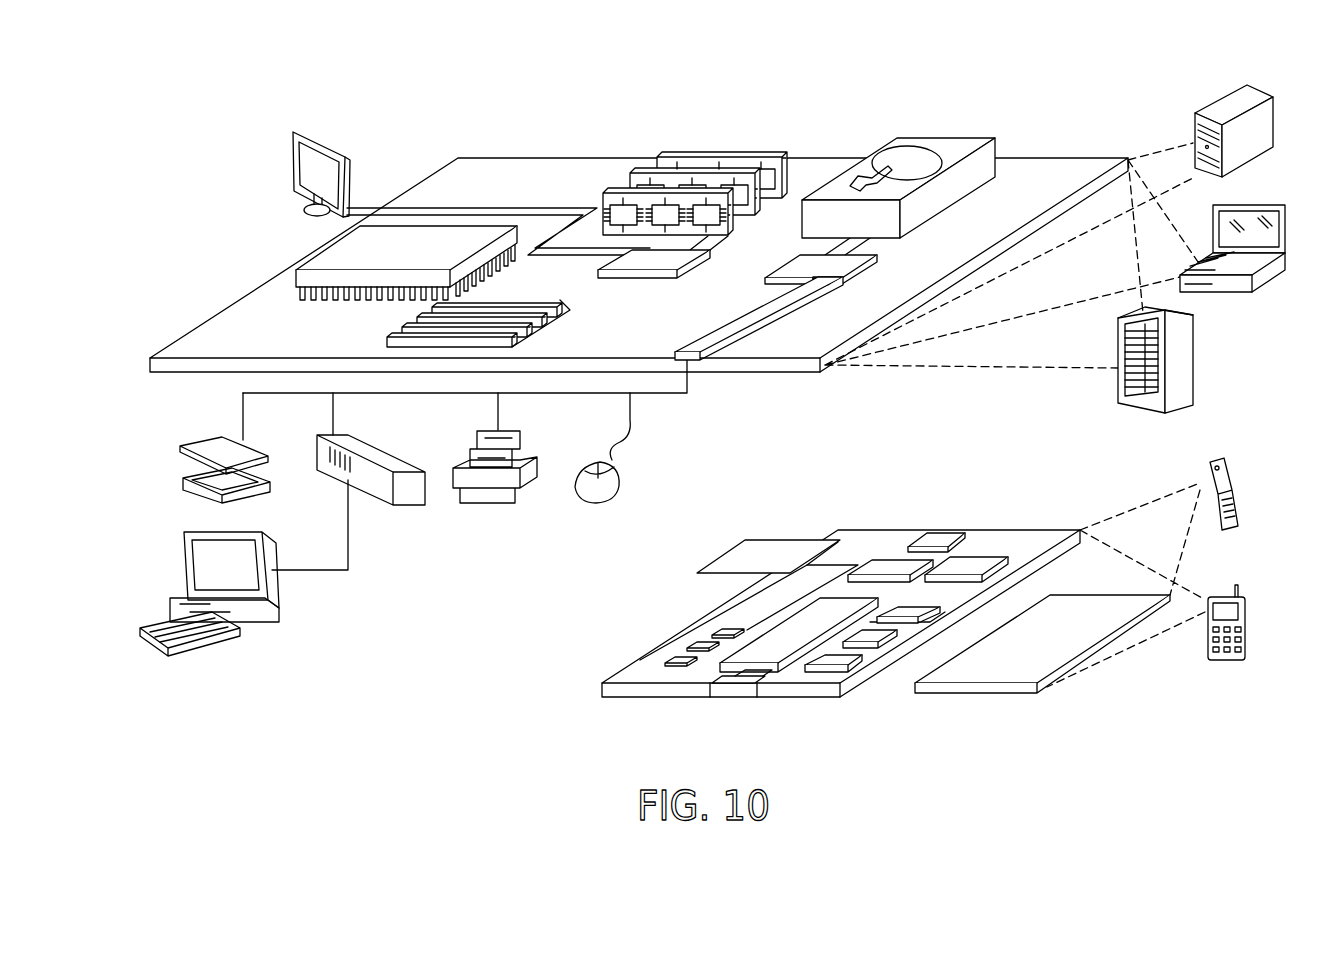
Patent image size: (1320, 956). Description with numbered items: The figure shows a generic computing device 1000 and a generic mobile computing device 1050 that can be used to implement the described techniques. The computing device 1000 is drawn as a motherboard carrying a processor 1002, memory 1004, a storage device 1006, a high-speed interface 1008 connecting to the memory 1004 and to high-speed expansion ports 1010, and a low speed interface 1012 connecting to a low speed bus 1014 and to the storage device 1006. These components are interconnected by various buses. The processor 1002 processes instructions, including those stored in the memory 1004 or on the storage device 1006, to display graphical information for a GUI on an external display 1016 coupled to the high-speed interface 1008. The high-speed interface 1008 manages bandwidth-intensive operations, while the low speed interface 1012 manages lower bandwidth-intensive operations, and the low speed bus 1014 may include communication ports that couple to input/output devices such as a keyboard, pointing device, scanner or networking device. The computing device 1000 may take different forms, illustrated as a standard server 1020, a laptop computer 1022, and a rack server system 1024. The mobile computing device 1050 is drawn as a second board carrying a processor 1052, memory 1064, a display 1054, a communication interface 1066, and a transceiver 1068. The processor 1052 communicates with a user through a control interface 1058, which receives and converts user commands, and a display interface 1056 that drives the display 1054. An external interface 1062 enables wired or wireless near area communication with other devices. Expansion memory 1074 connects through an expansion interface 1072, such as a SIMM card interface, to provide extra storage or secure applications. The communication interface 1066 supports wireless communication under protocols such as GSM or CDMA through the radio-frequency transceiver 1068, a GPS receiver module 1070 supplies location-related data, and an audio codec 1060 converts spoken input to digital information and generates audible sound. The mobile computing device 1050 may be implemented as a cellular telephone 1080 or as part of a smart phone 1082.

The computing device 1000 is at (414, 110).
The processor 1002 is at (318, 252).
The memory 1004 is at (730, 153).
The storage device 1006 is at (937, 137).
The high-speed interface 1008 is at (665, 257).
The high-speed expansion ports 1010 is at (412, 327).
The low speed interface 1012 is at (797, 262).
The low speed bus 1014 is at (693, 347).
The display 1016 is at (297, 133).
The standard server 1020 is at (1215, 112).
The laptop computer 1022 is at (1265, 203).
The rack server system 1024 is at (1195, 362).
The mobile computer device 1050 is at (556, 708).
The processor 1052 is at (772, 638).
The display 1054 is at (1080, 610).
The display interface 1056 is at (848, 663).
The control interface 1058 is at (878, 637).
The audio codec 1060 is at (915, 607).
The external interface 1062 is at (735, 690).
The memory 1064 is at (695, 643).
The communication interface 1066 is at (890, 560).
The transceiver 1068 is at (973, 558).
The GPS receiver module 1070 is at (938, 535).
The expansion interface 1072 is at (820, 540).
The expansion memory 1074 is at (743, 540).
The cellular telephone 1080 is at (1212, 462).
The smart phone 1082 is at (1220, 595).